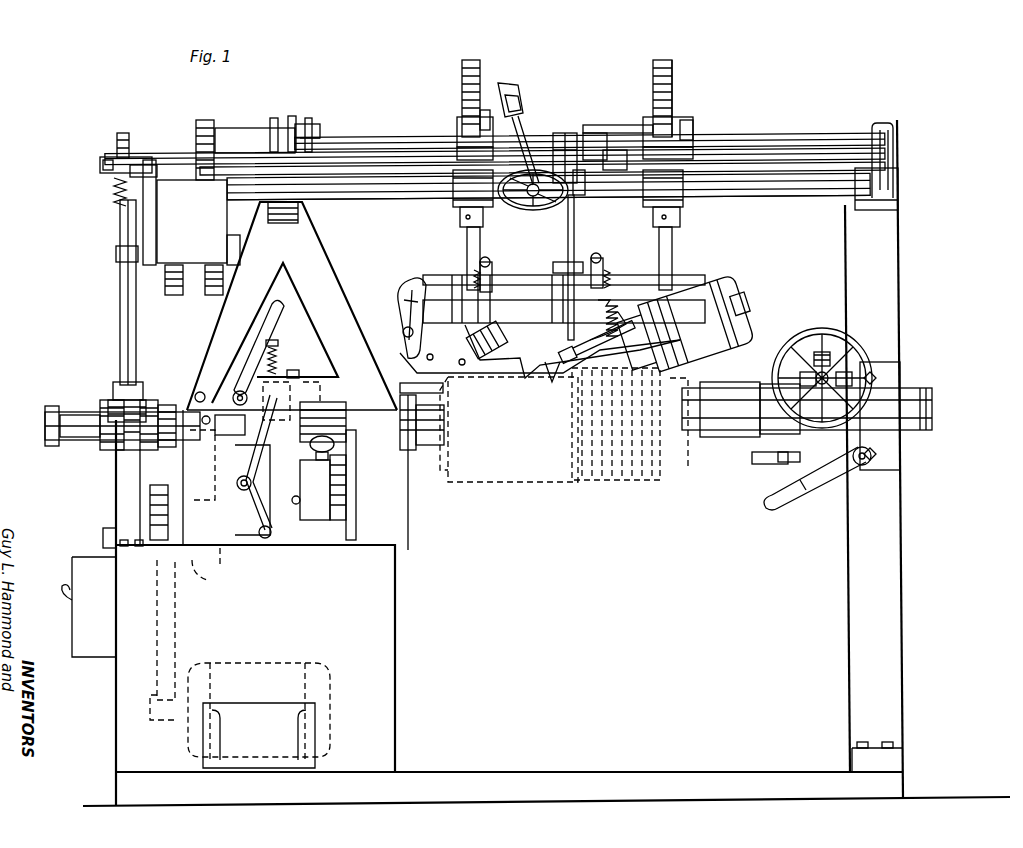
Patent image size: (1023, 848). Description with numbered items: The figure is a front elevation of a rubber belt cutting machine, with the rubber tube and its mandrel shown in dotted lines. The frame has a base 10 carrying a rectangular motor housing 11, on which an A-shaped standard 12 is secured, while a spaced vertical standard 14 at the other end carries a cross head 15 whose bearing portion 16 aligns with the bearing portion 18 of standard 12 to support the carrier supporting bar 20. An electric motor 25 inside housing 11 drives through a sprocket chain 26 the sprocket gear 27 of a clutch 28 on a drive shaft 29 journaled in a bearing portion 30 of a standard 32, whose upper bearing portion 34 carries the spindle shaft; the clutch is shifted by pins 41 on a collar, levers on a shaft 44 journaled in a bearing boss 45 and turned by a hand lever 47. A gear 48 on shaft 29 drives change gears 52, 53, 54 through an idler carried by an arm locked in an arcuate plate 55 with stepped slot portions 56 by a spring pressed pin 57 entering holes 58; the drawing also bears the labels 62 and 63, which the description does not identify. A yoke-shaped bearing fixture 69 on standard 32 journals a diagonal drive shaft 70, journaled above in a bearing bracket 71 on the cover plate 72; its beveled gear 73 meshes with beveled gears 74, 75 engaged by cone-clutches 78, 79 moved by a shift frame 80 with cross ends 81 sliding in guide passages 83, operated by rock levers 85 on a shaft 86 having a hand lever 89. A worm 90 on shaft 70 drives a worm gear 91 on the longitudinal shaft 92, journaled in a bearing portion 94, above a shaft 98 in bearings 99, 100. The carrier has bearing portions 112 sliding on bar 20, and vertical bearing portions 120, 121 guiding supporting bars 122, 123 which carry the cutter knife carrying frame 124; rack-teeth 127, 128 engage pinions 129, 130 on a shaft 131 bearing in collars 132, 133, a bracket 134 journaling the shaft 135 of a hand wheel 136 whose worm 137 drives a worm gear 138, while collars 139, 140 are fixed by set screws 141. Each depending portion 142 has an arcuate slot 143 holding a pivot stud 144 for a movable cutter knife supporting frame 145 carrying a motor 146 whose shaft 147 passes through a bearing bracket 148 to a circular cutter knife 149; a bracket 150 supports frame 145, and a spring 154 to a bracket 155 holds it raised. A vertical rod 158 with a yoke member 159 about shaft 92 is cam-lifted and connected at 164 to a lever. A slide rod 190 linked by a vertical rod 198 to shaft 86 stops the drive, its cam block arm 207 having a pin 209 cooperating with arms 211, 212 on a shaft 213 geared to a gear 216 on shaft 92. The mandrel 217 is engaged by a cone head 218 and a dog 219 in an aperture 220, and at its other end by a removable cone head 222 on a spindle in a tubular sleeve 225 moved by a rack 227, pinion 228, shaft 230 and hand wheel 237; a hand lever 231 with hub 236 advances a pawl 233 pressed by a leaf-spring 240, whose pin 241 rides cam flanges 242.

The base 10 is at (596, 784).
The motor housing 11 is at (396, 591).
The vertical standard 12 is at (335, 300).
The vertical standard 14 is at (890, 266).
The horizontal cross head 15 is at (897, 166).
The cylindrical bearing portion 16 is at (890, 212).
The cylindrical bearing portion 18 is at (318, 205).
The carrier supporting bar 20 is at (770, 200).
The electric motor 25 is at (262, 672).
The sprocket chain 26 is at (170, 610).
The sprocket gear 27 is at (160, 485).
The clutch 28 is at (195, 576).
The drive shaft 29 is at (240, 565).
The bearing portion 30 is at (105, 540).
The standard 32 is at (116, 508).
The bearing portion 34 is at (128, 452).
The pin 41 is at (248, 540).
The horizontal transverse shaft 44 is at (236, 485).
The bearing boss 45 is at (258, 535).
The hand lever 47 is at (252, 455).
The gear 48 is at (352, 545).
The gear 52 is at (330, 402).
The gear 53 is at (296, 388).
The gear 54 is at (295, 370).
The slotted arcuate plate 55 is at (340, 520).
The stepped slot portion 56 is at (302, 510).
The spring pressed pin 57 is at (335, 442).
The hole 58 is at (294, 505).
The spring seat 62 is at (280, 362).
The lever 63 is at (258, 360).
The yoke-shaped bearing fixture 69 is at (108, 400).
The diagonally disposed drive shaft 70 is at (120, 324).
The bearing bracket 71 is at (108, 160).
The cover plate 72 is at (142, 232).
The beveled gear 73 is at (112, 385).
The beveled gear 74 is at (100, 410).
The beveled gear 75 is at (160, 404).
The cone-clutch 78 is at (70, 445).
The cone-clutch 79 is at (197, 485).
The shift frame 80 is at (110, 450).
The cross end 81 is at (55, 408).
The guide passage 83 is at (138, 447).
The rock lever 85 is at (218, 394).
The horizontal transversely disposed shaft 86 is at (233, 392).
The hand lever 89 is at (270, 340).
The worm 90 is at (112, 198).
The worm gear 91 is at (128, 132).
The shaft 92 is at (360, 170).
The bearing portion 94 is at (215, 175).
The horizontal shaft 98 is at (118, 258).
The bearing 99 is at (167, 270).
The bearing 100 is at (240, 251).
The tubular cylindrical bearing portion 112 is at (456, 200).
The vertical cylindrical bearing portion 120 is at (456, 148).
The vertical cylindrical bearing portion 121 is at (700, 140).
The vertical supporting bar 122 is at (474, 62).
The vertical supporting bar 123 is at (665, 60).
The cutter knife carrying frame 124 is at (438, 290).
The rack-teeth 127 is at (462, 72).
The rack-teeth 128 is at (673, 78).
The pinion 129 is at (460, 125).
The pinion 130 is at (685, 122).
The horizontal shaft 131 is at (610, 125).
The collar 132 is at (482, 110).
The collar 133 is at (672, 118).
The bracket 134 is at (512, 86).
The shaft 135 is at (556, 130).
The hand wheel 136 is at (525, 210).
The worm 137 is at (522, 106).
The worm gear 138 is at (526, 125).
The collar 139 is at (462, 230).
The collar 140 is at (680, 224).
The set screw 141 is at (684, 210).
The arcuate shaped depending portion 142 is at (404, 312).
The arcuate slot 143 is at (408, 280).
The pivot stud 144 is at (404, 328).
The movable cutter knife supporting frame 145 is at (453, 378).
The motor 146 is at (490, 352).
The shaft 147 is at (645, 380).
The cylindrical bearing bracket 148 is at (590, 370).
The circular cutter knife 149 is at (560, 375).
The bracket 150 is at (610, 300).
The spring 154 is at (518, 270).
The bracket 155 is at (520, 264).
The vertical rod 158 is at (576, 236).
The yoke member 159 is at (583, 180).
The pivotal connection 164 is at (560, 262).
The horizontal slide rod 190 is at (398, 143).
The vertical rod 198 is at (196, 323).
The radially extending arm 207 is at (318, 128).
The pin 209 is at (310, 120).
The radially extending arm 211 is at (292, 116).
The radially extending arm 212 is at (270, 118).
The shaft 213 is at (312, 138).
The gear 216 is at (204, 120).
The cylindrical mandrel 217 is at (645, 465).
The cone head 218 is at (440, 454).
The dog 219 is at (438, 388).
The aperture 220 is at (478, 407).
The removable cone head 222 is at (688, 450).
The tubular sleeve 225 is at (725, 443).
The longitudinal rack 227 is at (815, 378).
The pinion 228 is at (820, 352).
The shaft 230 is at (800, 378).
The hand lever 231 is at (808, 480).
The pawl 233 is at (780, 462).
The hub 236 is at (865, 468).
The hand wheel 237 is at (866, 358).
The leaf-spring 240 is at (780, 462).
The pin 241 is at (770, 500).
The flange 242 is at (800, 485).